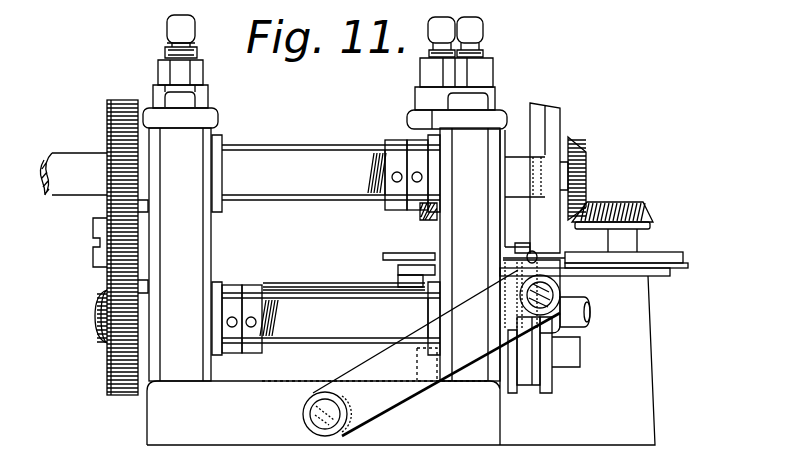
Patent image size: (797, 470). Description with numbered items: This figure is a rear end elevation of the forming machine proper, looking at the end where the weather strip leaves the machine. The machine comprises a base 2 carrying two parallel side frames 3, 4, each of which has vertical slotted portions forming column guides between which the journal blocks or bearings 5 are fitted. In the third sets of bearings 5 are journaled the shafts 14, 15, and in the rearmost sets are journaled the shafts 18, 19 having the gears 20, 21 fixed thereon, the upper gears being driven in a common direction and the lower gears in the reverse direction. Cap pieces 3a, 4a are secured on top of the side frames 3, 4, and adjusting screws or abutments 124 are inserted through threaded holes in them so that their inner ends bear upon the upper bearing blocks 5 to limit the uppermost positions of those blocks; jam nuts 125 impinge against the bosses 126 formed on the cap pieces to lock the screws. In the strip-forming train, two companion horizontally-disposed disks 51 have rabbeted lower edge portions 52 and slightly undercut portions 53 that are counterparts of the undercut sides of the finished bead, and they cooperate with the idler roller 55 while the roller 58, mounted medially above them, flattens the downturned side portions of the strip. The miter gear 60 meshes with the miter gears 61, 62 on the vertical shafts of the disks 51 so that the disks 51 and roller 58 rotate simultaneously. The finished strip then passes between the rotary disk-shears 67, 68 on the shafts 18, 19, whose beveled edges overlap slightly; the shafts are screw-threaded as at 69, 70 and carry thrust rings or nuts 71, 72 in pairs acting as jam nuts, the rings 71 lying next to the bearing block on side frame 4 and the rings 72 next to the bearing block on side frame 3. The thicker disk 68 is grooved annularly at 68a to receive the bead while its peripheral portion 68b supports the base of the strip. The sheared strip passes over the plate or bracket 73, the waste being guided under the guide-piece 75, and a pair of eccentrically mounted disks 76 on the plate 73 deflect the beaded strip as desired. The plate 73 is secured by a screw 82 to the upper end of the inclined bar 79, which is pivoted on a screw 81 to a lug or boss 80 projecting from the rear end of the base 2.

The base 2 is at (242, 428).
The side frame 3 is at (190, 255).
The cap piece 3a is at (215, 118).
The side frame 4 is at (463, 142).
The cap piece 4a is at (415, 119).
The journal blocks or bearings 5 is at (218, 148).
The shaft 14 is at (292, 147).
The shaft 15 is at (318, 296).
The shaft 18 is at (330, 172).
The shaft 19 is at (344, 319).
The gear 20 is at (123, 183).
The gear 21 is at (120, 330).
The disks 51 is at (390, 263).
The undercut or rabbeted portion 52 is at (696, 287).
The undercut portion 53 is at (398, 271).
The roller 55 is at (580, 358).
The roller 58 is at (558, 118).
The miter gear 60 is at (582, 161).
The miter gear 61 is at (430, 212).
The miter gear 62 is at (625, 199).
The rotary disk-shear 67 is at (533, 137).
The rotary disk-shear 68 is at (515, 386).
The annular groove 68a is at (535, 362).
The peripheral portion 68b is at (545, 386).
The screw-threading 69 is at (393, 195).
The screw-threading 70 is at (271, 322).
The thrust rings or nuts 71 is at (413, 192).
The thrust rings or nuts 72 is at (232, 349).
The plate or bracket 73 is at (552, 277).
The guide-piece 75 is at (520, 246).
The disks 76 is at (525, 262).
The inclined bar or member 79 is at (472, 352).
The lug or boss 80 is at (306, 412).
The screw 81 is at (322, 415).
The screw 82 is at (591, 310).
The adjusting screws or abutments 124 is at (167, 52).
The jam nuts 125 is at (160, 70).
The bosses 126 is at (153, 92).